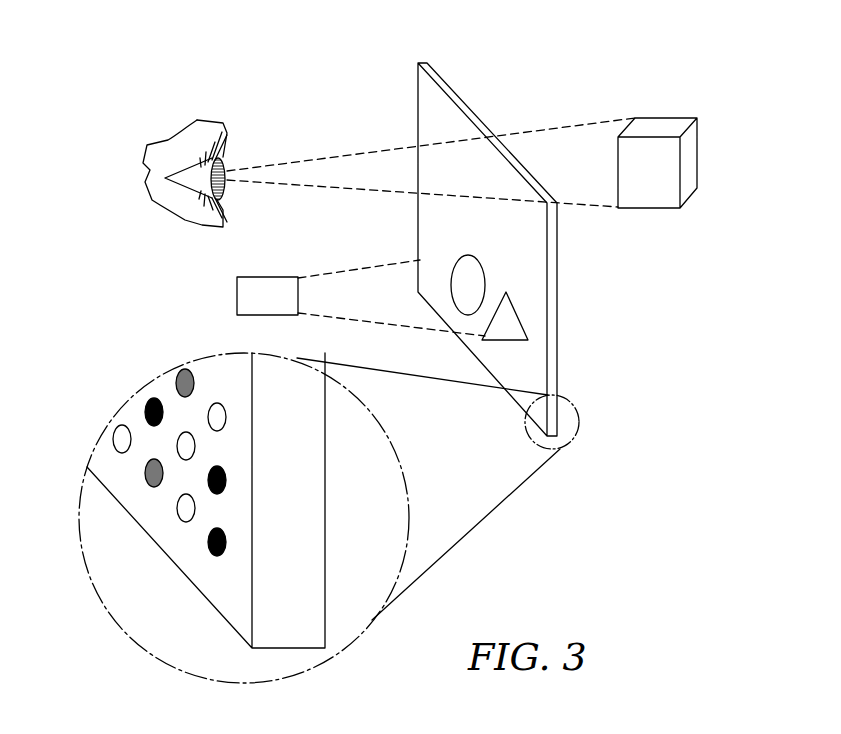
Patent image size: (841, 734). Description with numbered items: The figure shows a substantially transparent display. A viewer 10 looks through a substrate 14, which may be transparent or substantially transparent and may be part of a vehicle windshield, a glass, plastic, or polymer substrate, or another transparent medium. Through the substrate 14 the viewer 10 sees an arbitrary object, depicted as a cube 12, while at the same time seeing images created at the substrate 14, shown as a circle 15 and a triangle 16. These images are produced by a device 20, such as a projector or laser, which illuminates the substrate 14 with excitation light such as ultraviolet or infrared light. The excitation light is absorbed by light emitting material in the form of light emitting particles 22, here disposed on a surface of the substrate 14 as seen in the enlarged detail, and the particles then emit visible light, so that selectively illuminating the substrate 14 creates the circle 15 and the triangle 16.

The viewer 10 is at (218, 162).
The cube 12 is at (660, 127).
The substrate 14 is at (458, 102).
The circle 15 is at (458, 278).
The triangle 16 is at (493, 323).
The device 20 is at (266, 277).
The light emitting particles 22 is at (178, 380).